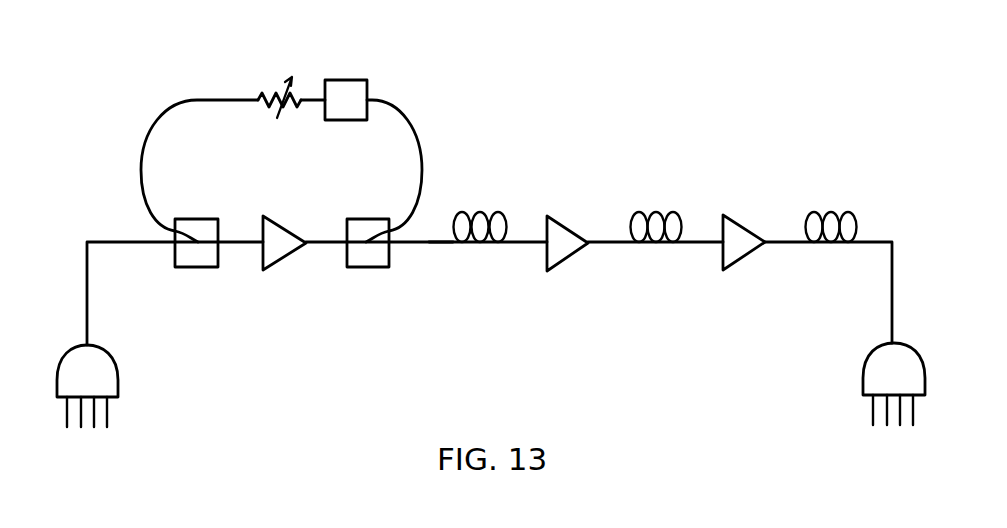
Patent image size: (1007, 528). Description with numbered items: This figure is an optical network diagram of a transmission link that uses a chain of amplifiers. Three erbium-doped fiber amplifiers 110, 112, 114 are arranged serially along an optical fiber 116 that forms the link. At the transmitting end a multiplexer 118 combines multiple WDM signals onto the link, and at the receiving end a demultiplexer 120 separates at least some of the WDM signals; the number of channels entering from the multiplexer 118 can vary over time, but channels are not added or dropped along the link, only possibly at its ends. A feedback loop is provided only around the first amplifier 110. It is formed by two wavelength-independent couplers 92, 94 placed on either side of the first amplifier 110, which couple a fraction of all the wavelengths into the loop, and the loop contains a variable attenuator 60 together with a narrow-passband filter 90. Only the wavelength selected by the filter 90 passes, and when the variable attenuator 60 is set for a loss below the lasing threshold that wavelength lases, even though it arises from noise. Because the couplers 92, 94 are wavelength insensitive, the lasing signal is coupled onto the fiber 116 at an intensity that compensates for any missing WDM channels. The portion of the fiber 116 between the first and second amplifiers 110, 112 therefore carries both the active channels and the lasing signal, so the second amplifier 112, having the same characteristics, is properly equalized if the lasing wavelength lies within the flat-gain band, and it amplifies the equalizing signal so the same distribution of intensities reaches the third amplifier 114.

The variable attenuator 60 is at (263, 99).
The narrow-passband filter 90 is at (360, 80).
The wavelength-independent coupler 92 is at (200, 258).
The wavelength-independent coupler 94 is at (373, 260).
The first erbium-doped fiber amplifier 110 is at (283, 250).
The second erbium-doped fiber amplifier 112 is at (567, 252).
The third erbium-doped fiber amplifier 114 is at (745, 250).
The optical fiber 116 is at (421, 240).
The multiplexer 118 is at (105, 378).
The demultiplexer 120 is at (873, 378).